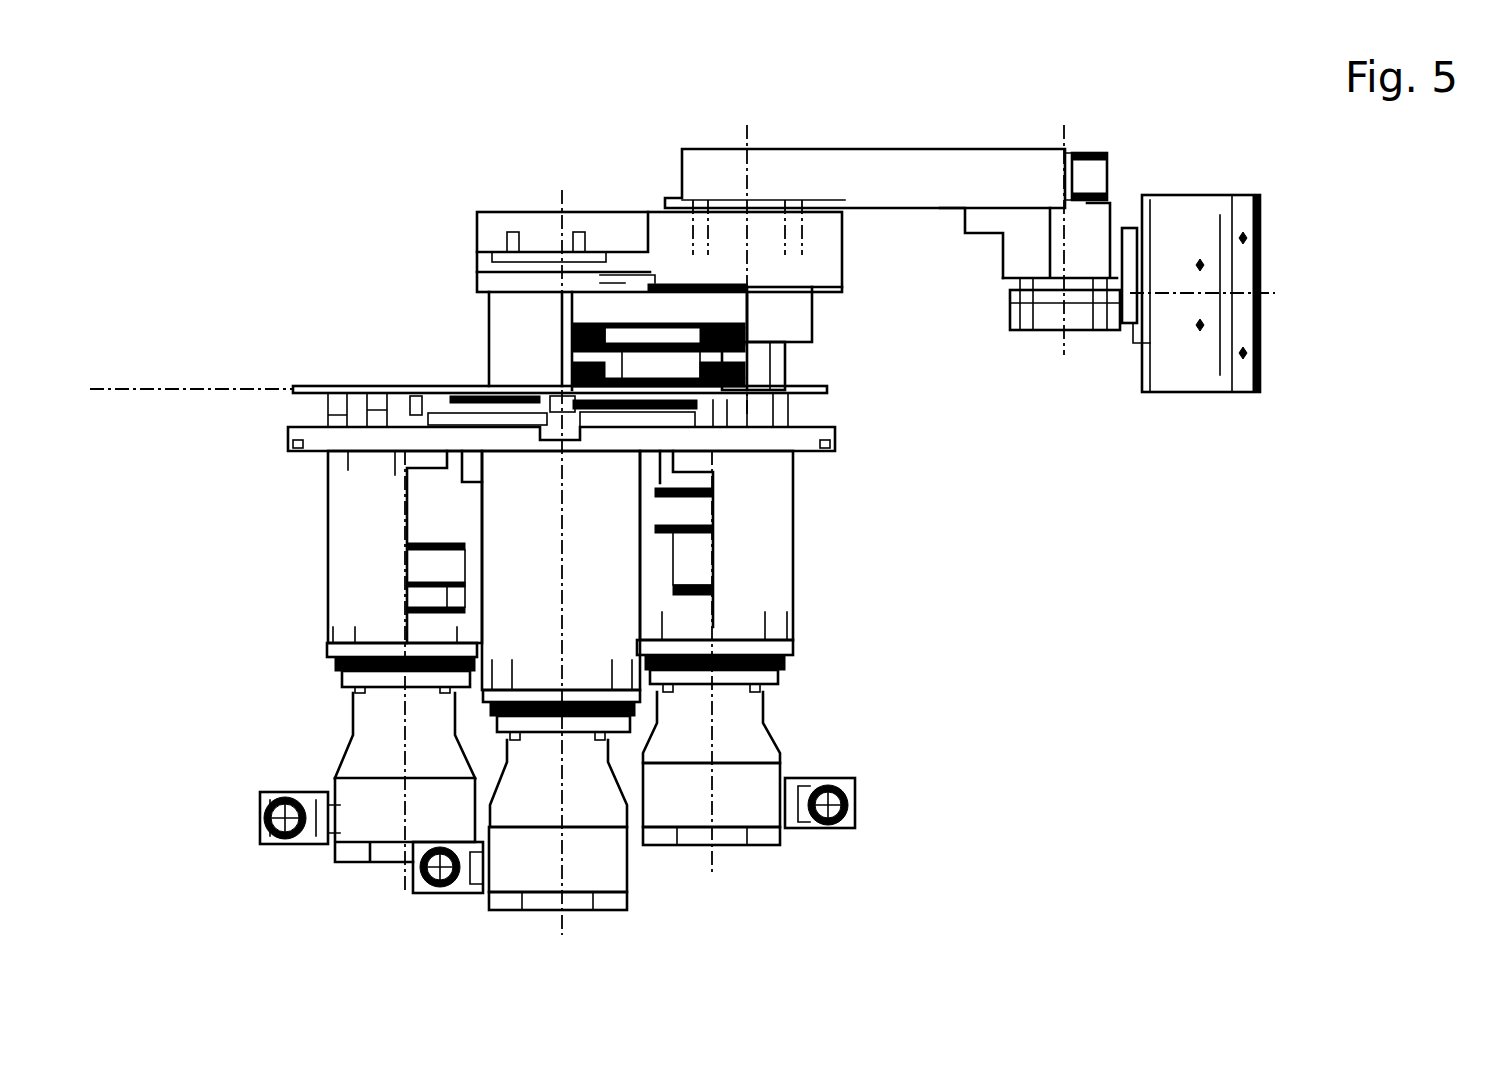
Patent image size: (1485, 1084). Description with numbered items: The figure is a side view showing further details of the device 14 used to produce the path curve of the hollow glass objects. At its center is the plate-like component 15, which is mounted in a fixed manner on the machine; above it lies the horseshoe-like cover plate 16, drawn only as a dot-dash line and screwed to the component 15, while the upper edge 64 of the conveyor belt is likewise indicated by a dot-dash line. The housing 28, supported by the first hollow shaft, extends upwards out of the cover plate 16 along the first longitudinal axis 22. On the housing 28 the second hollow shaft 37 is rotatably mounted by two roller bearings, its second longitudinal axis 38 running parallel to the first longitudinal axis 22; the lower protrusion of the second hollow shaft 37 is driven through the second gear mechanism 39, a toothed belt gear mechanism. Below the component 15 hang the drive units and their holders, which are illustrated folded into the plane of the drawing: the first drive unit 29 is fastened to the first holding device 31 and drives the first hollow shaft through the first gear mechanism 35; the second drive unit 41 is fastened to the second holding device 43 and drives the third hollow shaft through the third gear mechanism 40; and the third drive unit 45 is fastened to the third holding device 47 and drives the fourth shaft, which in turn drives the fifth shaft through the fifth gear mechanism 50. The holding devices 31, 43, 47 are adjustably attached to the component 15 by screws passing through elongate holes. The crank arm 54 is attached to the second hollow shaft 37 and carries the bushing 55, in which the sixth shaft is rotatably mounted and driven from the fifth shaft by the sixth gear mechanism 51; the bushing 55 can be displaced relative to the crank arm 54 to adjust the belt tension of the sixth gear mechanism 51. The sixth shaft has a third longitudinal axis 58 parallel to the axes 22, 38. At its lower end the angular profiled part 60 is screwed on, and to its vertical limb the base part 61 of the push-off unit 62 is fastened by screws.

The device 14 is at (1093, 603).
The plate-like component 15 is at (300, 432).
The cover plate 16 is at (316, 384).
The first longitudinal axis 22 is at (562, 202).
The housing 28 is at (527, 338).
The first drive unit 29 is at (737, 725).
The first holding device 31 is at (740, 583).
The first gear mechanism 35 is at (683, 508).
The second hollow shaft 37 is at (780, 316).
The second longitudinal axis 38 is at (750, 134).
The second gear mechanism 39 is at (793, 368).
The third gear mechanism 40 is at (430, 569).
The second drive unit 41 is at (382, 748).
The second holding device 43 is at (355, 585).
The third drive unit 45 is at (590, 853).
The third holding device 47 is at (541, 566).
The fifth gear mechanism 50 is at (679, 306).
The sixth gear mechanism 51 is at (1108, 178).
The crank arm 54 is at (938, 182).
The bushing 55 is at (1027, 258).
The third longitudinal axis 58 is at (1068, 130).
The angular profiled part 60 is at (1130, 318).
The base part 61 is at (1180, 375).
The push-off unit 62 is at (1245, 393).
The upper edge of the conveyor belt 64 is at (118, 387).